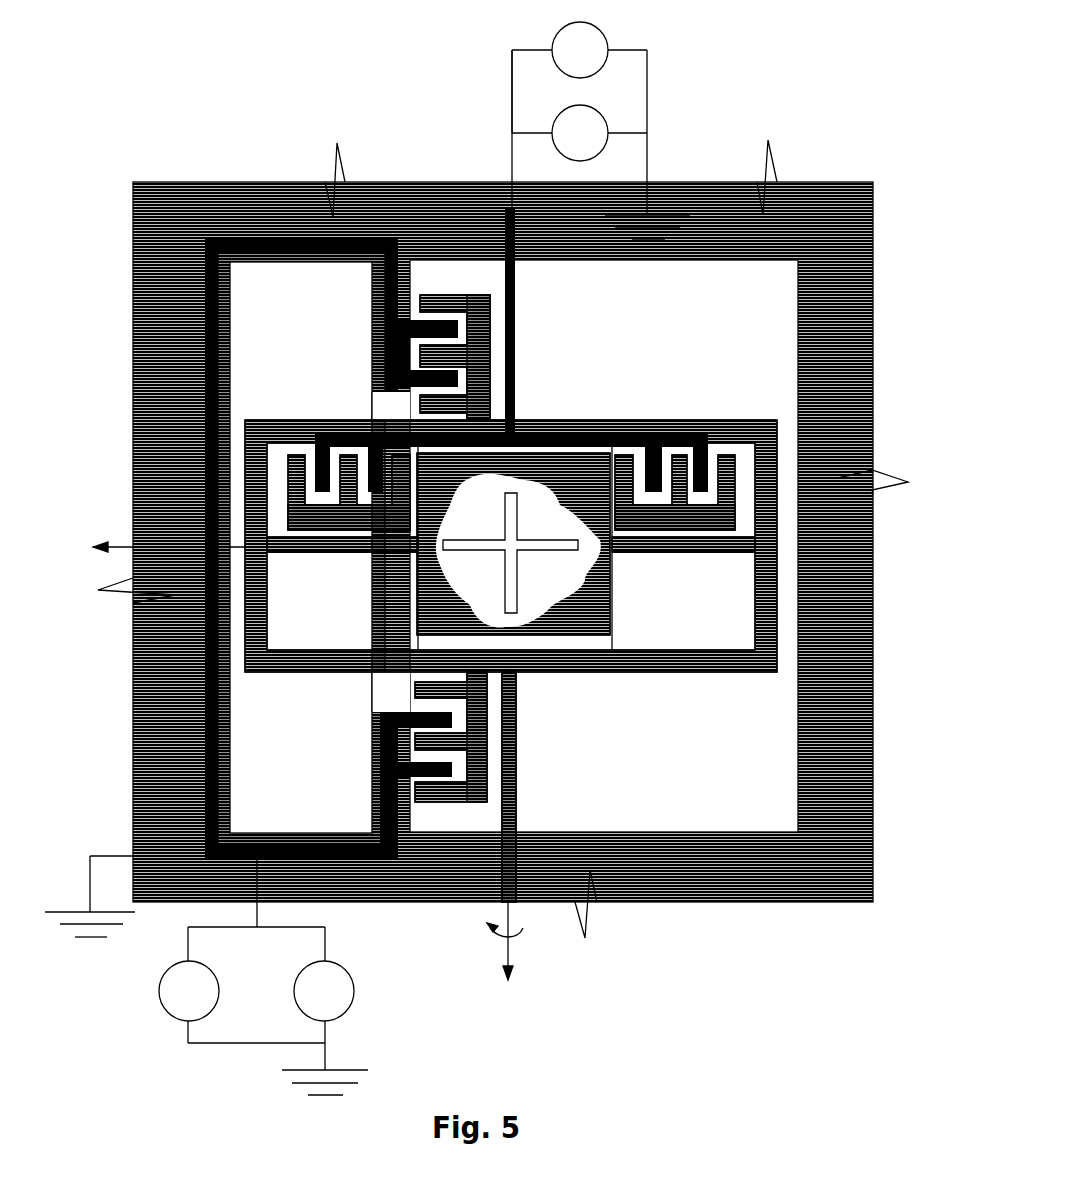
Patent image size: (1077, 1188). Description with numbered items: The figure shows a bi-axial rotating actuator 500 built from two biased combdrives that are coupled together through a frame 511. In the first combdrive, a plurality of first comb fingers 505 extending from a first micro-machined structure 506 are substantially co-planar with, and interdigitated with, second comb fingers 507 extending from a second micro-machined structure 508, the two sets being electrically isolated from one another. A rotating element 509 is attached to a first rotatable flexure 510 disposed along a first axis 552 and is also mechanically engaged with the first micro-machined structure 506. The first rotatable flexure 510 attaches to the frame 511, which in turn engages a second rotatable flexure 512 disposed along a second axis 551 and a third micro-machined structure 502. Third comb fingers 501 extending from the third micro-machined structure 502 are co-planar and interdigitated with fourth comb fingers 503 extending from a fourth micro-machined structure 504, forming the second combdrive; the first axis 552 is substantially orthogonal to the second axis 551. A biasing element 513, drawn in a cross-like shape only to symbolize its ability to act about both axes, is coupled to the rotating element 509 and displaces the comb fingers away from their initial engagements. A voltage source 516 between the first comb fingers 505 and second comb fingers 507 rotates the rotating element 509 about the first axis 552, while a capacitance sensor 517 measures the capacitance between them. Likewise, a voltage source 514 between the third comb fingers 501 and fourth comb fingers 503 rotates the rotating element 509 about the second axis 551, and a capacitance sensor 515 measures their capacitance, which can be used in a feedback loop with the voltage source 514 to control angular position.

The bi-axial rotating actuator 500 is at (128, 39).
The third comb fingers 501 is at (518, 290).
The third micro-machined structure 502 is at (478, 332).
The fourth comb fingers 503 is at (415, 392).
The fourth micro-machined structure 504 is at (378, 336).
The first comb fingers 505 is at (288, 458).
The first micro-machined structure 506 is at (368, 520).
The second comb fingers 507 is at (320, 450).
The second micro-machined structure 508 is at (528, 430).
The rotating element 509 is at (592, 612).
The first rotatable flexure 510 is at (283, 553).
The frame 511 is at (688, 672).
The second rotatable flexure 512 is at (518, 745).
The biasing element 513 is at (522, 508).
The voltage source 514 is at (354, 990).
The capacitance sensor 515 is at (165, 1008).
The voltage source 516 is at (608, 110).
The capacitance sensor 517 is at (608, 45).
The second axis 551 is at (510, 950).
The first axis 552 is at (116, 562).